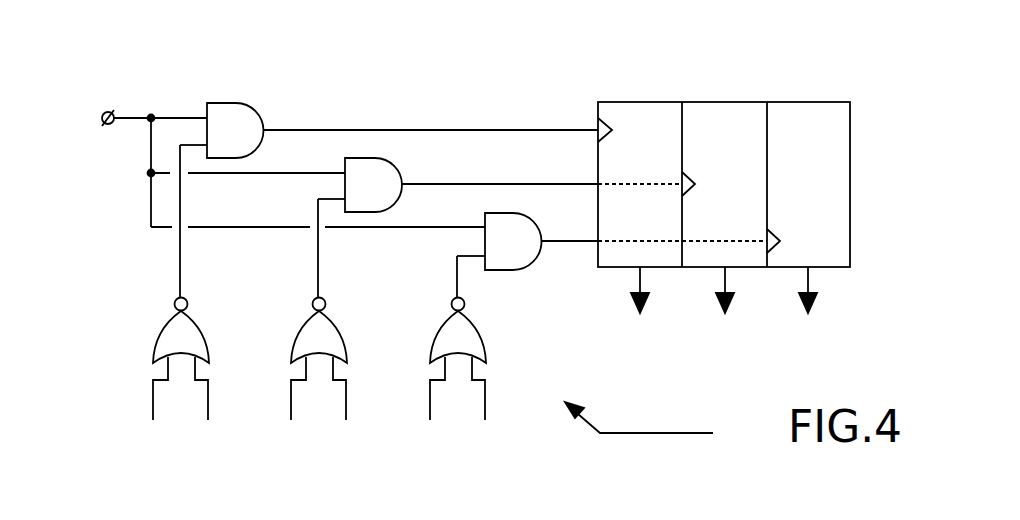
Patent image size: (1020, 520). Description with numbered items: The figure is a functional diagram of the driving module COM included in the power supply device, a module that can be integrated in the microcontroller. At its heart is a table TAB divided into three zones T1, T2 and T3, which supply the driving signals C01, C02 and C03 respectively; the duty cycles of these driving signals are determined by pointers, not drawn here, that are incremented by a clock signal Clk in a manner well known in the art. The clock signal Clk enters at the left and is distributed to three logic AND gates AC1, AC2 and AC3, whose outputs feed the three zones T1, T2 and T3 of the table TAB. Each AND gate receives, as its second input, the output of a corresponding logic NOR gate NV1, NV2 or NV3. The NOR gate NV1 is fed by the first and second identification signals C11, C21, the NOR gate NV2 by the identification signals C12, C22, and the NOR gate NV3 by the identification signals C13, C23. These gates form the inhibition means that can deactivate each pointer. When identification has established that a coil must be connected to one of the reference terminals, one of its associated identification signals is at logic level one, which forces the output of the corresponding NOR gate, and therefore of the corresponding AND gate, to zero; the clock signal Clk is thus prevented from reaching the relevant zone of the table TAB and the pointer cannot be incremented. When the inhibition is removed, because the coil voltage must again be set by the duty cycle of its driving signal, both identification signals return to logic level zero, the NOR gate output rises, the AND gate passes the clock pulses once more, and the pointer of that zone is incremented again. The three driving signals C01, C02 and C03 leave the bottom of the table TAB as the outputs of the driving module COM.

The clock signal Clk is at (282, 150).
The logic AND gate AC1 is at (233, 103).
The logic AND gate AC2 is at (397, 158).
The logic AND gate AC3 is at (500, 270).
The table TAB is at (625, 102).
The zone T1 is at (640, 184).
The zone T2 is at (724, 184).
The zone T3 is at (808, 184).
The driving signal C01 is at (639, 314).
The driving signal C02 is at (724, 314).
The driving signal C03 is at (808, 314).
The driving module COM is at (639, 407).
The logic NOR gate NV1 is at (173, 312).
The logic NOR gate NV2 is at (311, 312).
The logic NOR gate NV3 is at (450, 312).
The first identification signal C11 is at (148, 405).
The second identification signal C21 is at (210, 405).
The first identification signal C12 is at (288, 405).
The second identification signal C22 is at (350, 405).
The first identification signal C13 is at (427, 405).
The second identification signal C23 is at (487, 405).